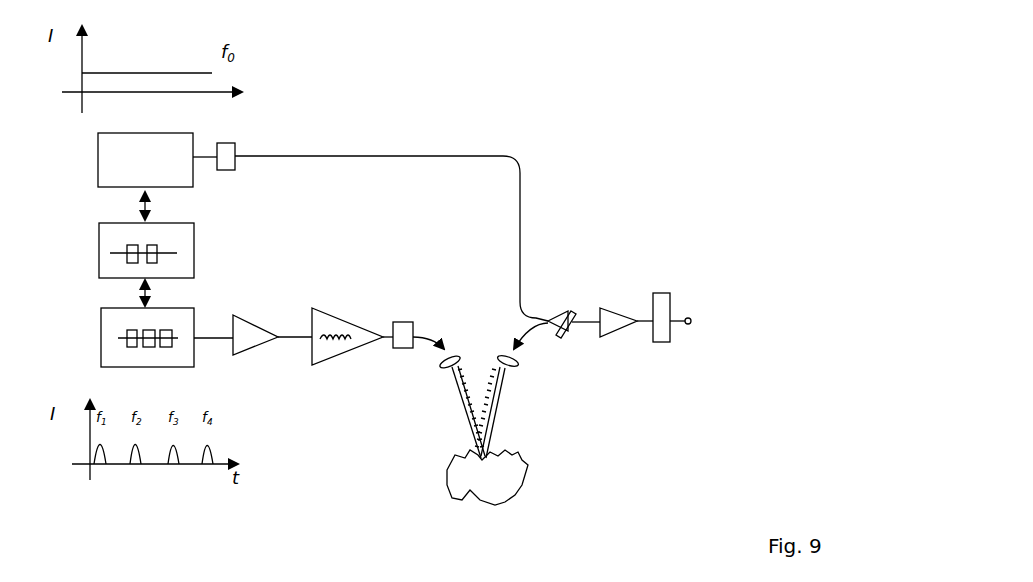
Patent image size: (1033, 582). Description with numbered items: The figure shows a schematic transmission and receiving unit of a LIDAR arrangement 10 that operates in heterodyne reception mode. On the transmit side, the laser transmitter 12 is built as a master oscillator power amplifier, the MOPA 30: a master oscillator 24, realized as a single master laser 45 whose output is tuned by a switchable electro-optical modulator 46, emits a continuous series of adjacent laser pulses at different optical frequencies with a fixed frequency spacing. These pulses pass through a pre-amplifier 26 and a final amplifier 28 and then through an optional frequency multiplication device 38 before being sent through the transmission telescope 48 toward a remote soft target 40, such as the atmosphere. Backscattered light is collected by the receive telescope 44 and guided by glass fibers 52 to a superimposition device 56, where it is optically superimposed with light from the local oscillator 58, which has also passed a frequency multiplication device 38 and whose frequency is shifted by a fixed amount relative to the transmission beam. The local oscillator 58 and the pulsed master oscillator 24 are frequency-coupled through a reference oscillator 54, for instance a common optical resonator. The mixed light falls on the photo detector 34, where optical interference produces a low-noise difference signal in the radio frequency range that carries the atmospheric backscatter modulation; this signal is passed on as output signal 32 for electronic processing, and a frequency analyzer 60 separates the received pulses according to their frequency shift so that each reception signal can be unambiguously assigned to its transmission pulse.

The LIDAR arrangement 10 is at (598, 140).
The laser transmitter 12 is at (349, 97).
The master oscillator 24 is at (168, 340).
The pre-amplifier 26 is at (255, 322).
The final amplifier 28 is at (343, 318).
The MOPA 30 is at (386, 245).
The signal evaluation device 32 is at (697, 333).
The photo detector 34 is at (682, 319).
The frequency multiplication device 38 is at (227, 150).
The soft target 40 is at (513, 482).
The receive telescope 44 is at (513, 368).
The master laser 45 is at (193, 365).
The electro-optical modulator 46 is at (149, 354).
The transmission telescope 48 is at (440, 371).
The glass fibers 52 is at (523, 273).
The reference oscillator 54 is at (183, 242).
The superimposition device 56 is at (572, 313).
The local oscillator 58 is at (153, 140).
The frequency analyzer 60 is at (661, 217).